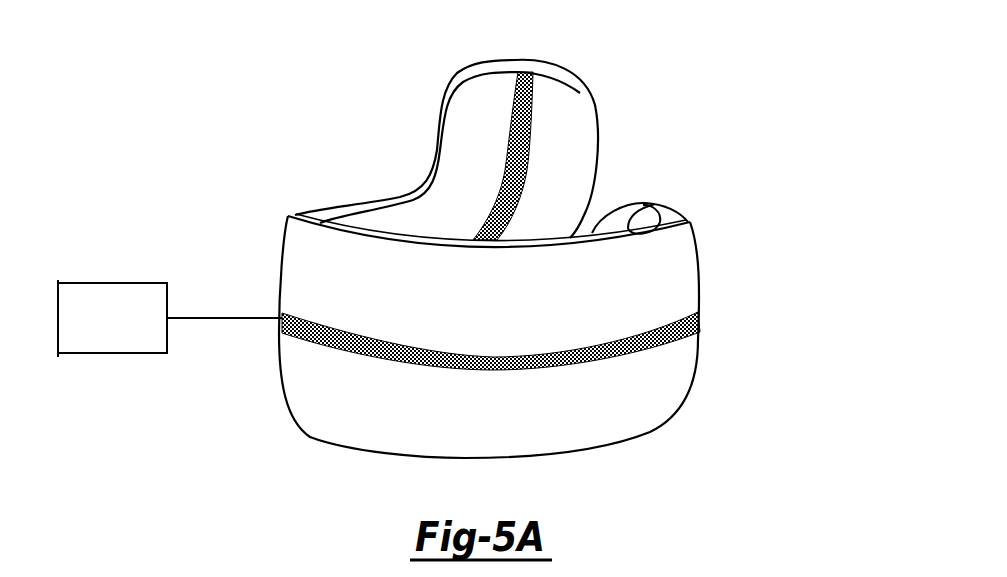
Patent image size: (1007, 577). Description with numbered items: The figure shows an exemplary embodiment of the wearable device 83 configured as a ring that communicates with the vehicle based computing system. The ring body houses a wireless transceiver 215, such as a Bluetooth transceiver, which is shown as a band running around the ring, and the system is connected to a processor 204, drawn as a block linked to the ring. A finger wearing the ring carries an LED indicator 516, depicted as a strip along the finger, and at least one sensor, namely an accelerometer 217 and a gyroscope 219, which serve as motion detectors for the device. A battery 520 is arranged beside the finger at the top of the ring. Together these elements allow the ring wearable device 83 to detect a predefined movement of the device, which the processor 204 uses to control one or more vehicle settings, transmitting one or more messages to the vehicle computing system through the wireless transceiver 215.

The wearable device 83 is at (252, 58).
The wireless transceiver 215 is at (640, 397).
The accelerometer 217 is at (491, 137).
The gyroscope 219 is at (573, 84).
The LED indicator 516 is at (520, 138).
The battery 520 is at (655, 204).
The processor 204 is at (127, 348).